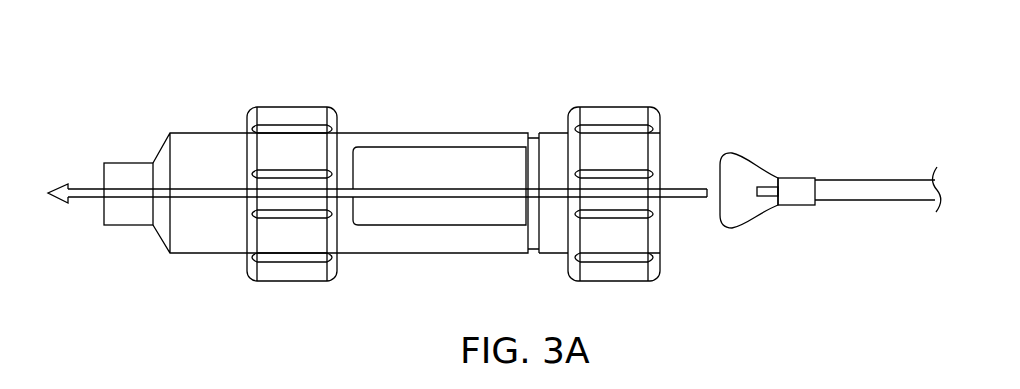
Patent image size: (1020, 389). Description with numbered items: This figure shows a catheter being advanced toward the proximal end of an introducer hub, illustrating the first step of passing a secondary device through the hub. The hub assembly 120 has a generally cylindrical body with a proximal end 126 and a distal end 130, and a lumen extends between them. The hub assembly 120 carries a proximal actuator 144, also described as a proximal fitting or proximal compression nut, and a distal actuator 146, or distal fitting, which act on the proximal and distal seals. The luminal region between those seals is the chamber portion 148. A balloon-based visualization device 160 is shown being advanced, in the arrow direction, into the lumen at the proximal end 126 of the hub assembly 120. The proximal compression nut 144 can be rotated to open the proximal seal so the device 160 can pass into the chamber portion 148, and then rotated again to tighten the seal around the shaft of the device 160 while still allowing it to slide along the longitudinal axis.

The hub assembly 120 is at (138, 70).
The distal end 130 is at (103, 178).
The proximal end 126 is at (660, 130).
The chamber portion 148 is at (417, 138).
The distal actuator 146 is at (284, 80).
The proximal actuator 144 is at (608, 80).
The balloon-based visualization device 160 is at (794, 160).